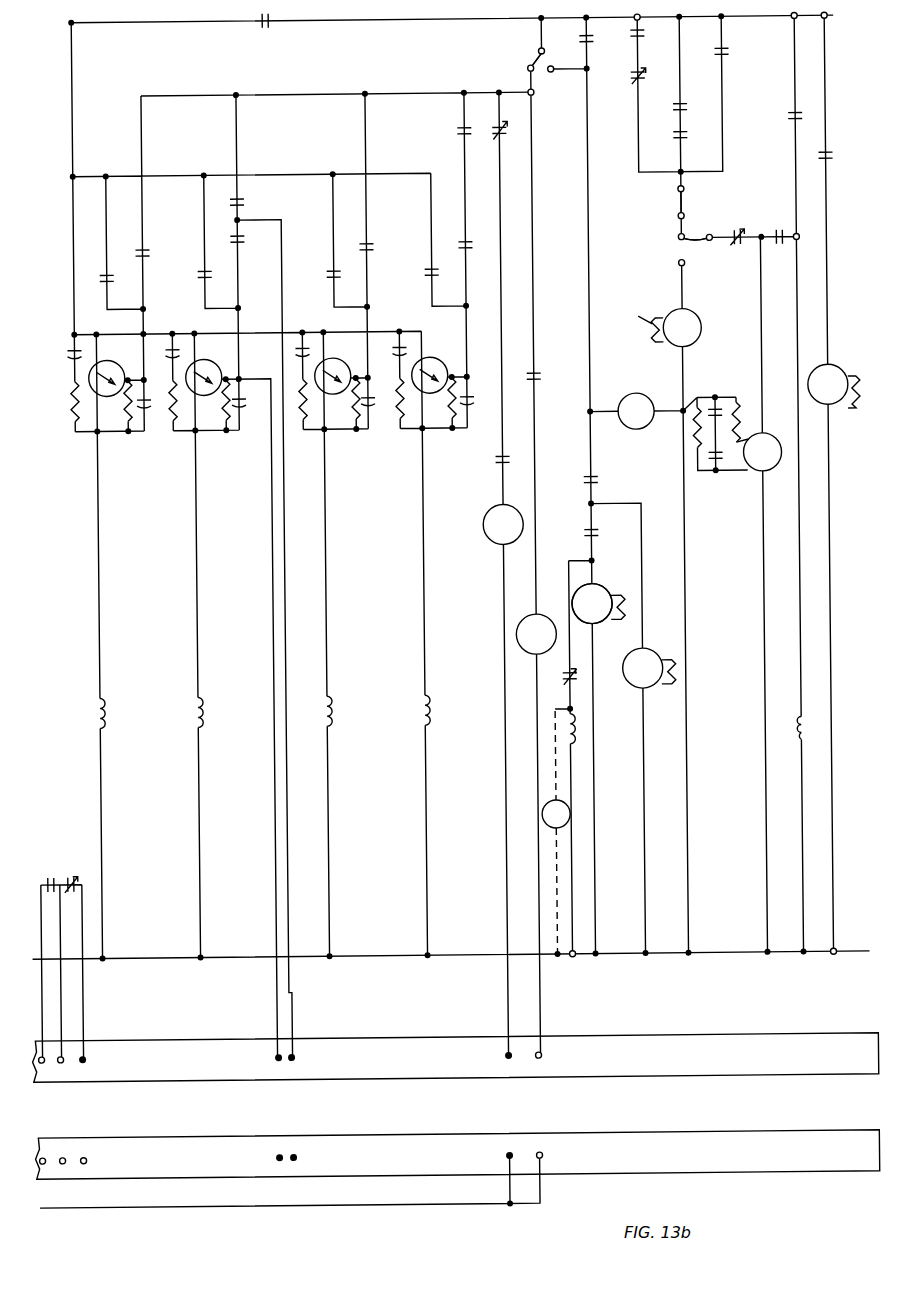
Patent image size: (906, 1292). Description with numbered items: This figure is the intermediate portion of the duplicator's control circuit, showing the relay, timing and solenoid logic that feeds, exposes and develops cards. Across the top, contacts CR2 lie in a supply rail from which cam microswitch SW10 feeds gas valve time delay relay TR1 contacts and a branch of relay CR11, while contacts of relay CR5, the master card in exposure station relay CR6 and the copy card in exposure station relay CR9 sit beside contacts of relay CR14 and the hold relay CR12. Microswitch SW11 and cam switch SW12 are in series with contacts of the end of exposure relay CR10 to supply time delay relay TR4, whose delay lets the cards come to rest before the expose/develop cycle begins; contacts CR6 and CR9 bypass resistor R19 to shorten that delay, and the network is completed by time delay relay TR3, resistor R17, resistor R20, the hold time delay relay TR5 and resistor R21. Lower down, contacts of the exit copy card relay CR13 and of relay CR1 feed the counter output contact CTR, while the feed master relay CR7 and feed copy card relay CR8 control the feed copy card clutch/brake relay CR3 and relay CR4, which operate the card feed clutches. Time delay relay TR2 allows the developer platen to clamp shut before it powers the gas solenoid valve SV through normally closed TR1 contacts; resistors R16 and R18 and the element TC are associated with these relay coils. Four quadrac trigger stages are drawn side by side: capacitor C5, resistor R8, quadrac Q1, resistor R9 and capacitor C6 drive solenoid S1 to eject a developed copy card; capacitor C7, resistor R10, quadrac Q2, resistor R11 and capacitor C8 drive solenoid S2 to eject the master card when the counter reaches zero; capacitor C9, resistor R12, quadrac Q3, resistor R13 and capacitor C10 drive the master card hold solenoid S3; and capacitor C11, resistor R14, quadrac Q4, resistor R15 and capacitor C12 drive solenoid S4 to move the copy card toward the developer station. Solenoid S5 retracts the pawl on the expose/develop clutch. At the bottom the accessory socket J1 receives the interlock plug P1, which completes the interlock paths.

The control relay contact CR2 is at (252, 26).
The cam microswitch SW10 is at (513, 53).
The gas valve time delay relay TR1 is at (576, 358).
The card in developer station relay CR11 is at (632, 256).
The control relay CR5 is at (690, 230).
The master card in exposure station relay CR6 is at (736, 137).
The copy card in exposure station relay CR9 is at (710, 398).
The relay CR14 is at (777, 118).
The hold relay CR12 is at (820, 158).
The microswitch SW11 is at (700, 193).
The cam switch SW12 is at (689, 239).
The end of exposure relay CR10 is at (535, 238).
The time delay relay TR4 is at (415, 549).
The time delay relay TR3 is at (695, 326).
The resistor R17 is at (638, 310).
The resistor R19 is at (692, 434).
The resistor R20 is at (745, 414).
The hold time delay relay TR5 is at (600, 314).
The resistor R21 is at (856, 370).
The exit copy card relay CR13 is at (160, 251).
The control relay contact CR1 is at (424, 279).
The counter output contact CTR is at (284, 236).
The feed master relay CR7 is at (546, 376).
The feed copy card relay CR8 is at (487, 478).
The feed copy card clutch/brake relay CR3 is at (484, 527).
The relay CR4 is at (536, 634).
The time delay relay TR2 is at (618, 704).
The resistor R16 is at (626, 594).
The resistor R18 is at (678, 664).
The gas solenoid valve SV is at (578, 737).
The thermocouple TC is at (539, 820).
The capacitor C5 is at (72, 346).
The resistor R8 is at (78, 420).
The quadrac Q1 is at (107, 368).
The resistor R9 is at (128, 428).
The capacitor C6 is at (152, 404).
The capacitor C7 is at (172, 346).
The resistor R10 is at (176, 420).
The quadrac Q2 is at (204, 367).
The resistor R11 is at (226, 428).
The capacitor C8 is at (247, 404).
The capacitor C9 is at (302, 349).
The resistor R12 is at (304, 420).
The quadrac Q3 is at (342, 346).
The resistor R13 is at (356, 428).
The capacitor C10 is at (378, 410).
The capacitor C11 is at (400, 346).
The resistor R14 is at (402, 420).
The quadrac Q4 is at (432, 361).
The resistor R15 is at (452, 428).
The capacitor C12 is at (480, 395).
The solenoid S1 is at (116, 713).
The solenoid S2 is at (214, 712).
The master card hold solenoid S3 is at (343, 711).
The solenoid S4 is at (441, 710).
The solenoid S5 is at (785, 728).
The accessory socket J1 is at (455, 1057).
The interlock plug P1 is at (456, 1154).